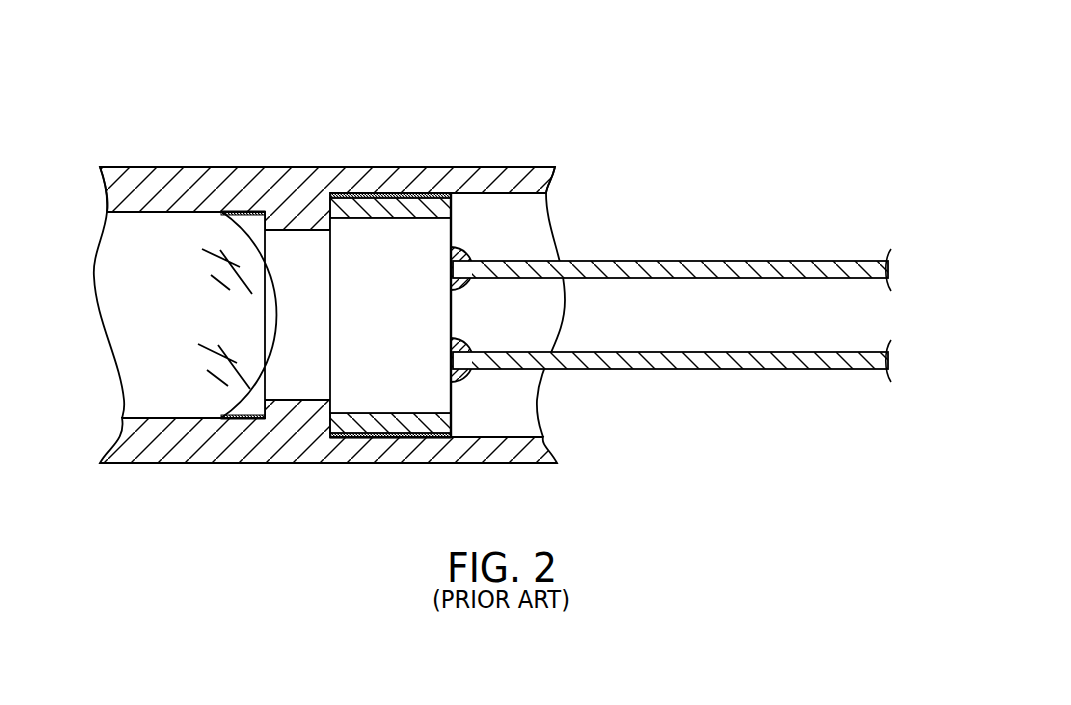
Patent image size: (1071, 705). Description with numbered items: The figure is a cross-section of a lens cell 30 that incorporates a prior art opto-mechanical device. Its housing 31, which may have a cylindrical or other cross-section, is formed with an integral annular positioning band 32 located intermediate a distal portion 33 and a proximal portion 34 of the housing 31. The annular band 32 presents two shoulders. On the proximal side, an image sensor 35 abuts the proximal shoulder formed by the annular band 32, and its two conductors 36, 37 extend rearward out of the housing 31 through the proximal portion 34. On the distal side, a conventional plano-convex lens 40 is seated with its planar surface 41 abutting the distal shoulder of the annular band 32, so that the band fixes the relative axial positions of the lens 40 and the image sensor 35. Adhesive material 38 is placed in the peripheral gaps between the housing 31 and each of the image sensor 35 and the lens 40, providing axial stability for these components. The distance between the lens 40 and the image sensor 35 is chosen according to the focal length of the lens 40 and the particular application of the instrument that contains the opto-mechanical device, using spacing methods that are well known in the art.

The lens cell 30 is at (603, 82).
The housing 31 is at (443, 175).
The annular positioning band 32 is at (297, 228).
The distal portion 33 is at (105, 190).
The proximal portion 34 is at (553, 176).
The image sensor 35 is at (390, 315).
The conductor 36 is at (690, 353).
The conductor 37 is at (692, 261).
The adhesive material 38 is at (237, 419).
The plano-convex lens 40 is at (197, 315).
The planar surface 41 is at (267, 262).